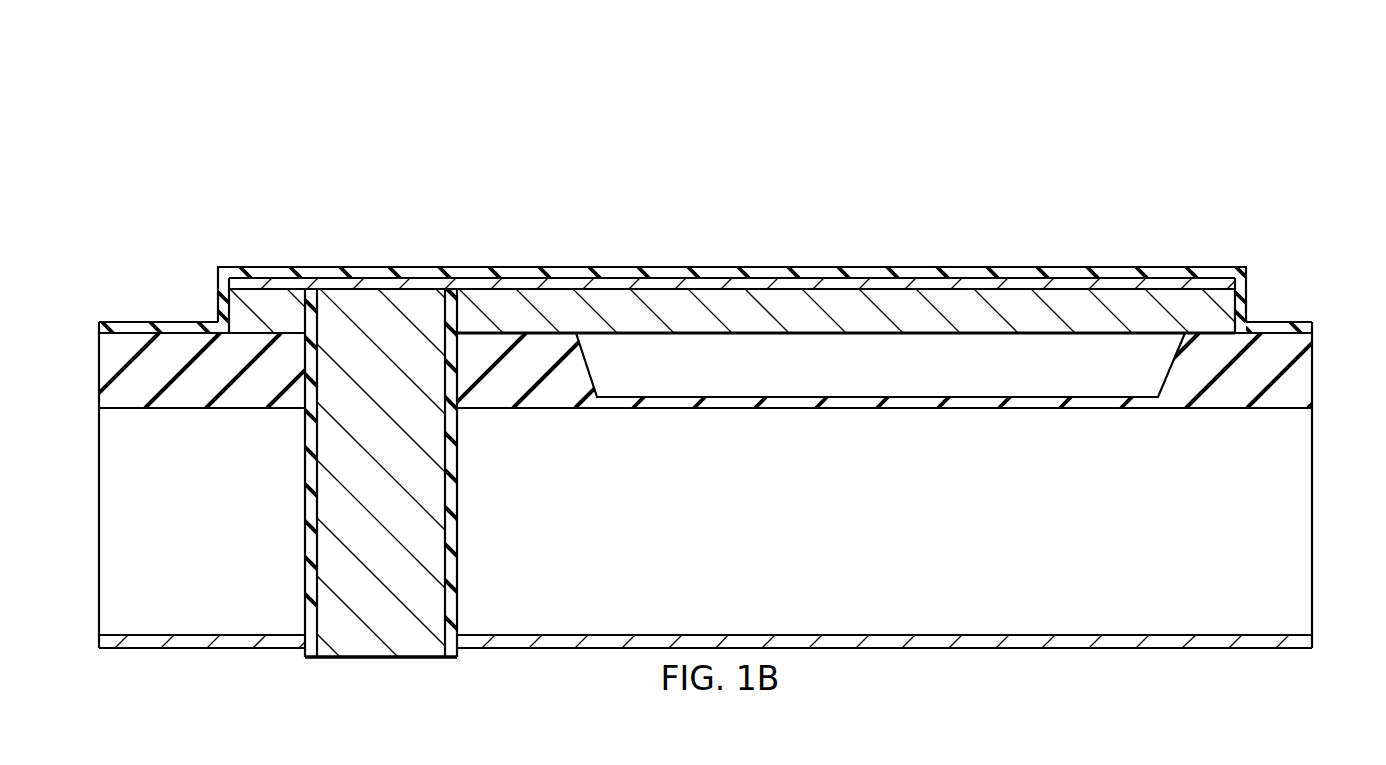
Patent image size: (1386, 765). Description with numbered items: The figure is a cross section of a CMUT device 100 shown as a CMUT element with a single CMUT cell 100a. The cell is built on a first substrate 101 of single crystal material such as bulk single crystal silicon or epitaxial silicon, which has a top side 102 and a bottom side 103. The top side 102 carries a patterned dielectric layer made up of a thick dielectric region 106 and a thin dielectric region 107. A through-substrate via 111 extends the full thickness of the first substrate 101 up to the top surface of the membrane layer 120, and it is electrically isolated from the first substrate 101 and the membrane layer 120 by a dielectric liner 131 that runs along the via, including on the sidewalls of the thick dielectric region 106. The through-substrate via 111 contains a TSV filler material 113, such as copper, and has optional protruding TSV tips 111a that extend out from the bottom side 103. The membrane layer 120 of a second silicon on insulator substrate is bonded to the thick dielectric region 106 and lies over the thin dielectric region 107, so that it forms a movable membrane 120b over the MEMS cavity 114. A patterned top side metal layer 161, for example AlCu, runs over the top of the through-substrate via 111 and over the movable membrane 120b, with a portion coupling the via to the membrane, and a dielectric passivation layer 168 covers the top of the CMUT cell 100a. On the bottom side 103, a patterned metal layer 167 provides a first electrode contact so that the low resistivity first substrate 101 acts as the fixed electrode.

The CMUT device 100 is at (380, 82).
The CMUT cell 100a is at (575, 206).
The first substrate 101 is at (866, 536).
The top side 102 is at (1158, 418).
The bottom side 103 is at (1232, 641).
The thick dielectric region 106 is at (106, 372).
The thin dielectric region 107 is at (915, 409).
The through-substrate via 111 is at (352, 244).
The protruding TSV tips 111a is at (285, 665).
The TSV filler material 113 is at (363, 483).
The MEMS cavity 114 is at (859, 375).
The membrane layer 120 is at (272, 300).
The movable membrane 120b is at (938, 320).
The dielectric liner 131 is at (312, 475).
The patterned top side metal layer 161 is at (1020, 284).
The patterned metal layer 167 is at (1013, 641).
The dielectric passivation layer 168 is at (868, 273).